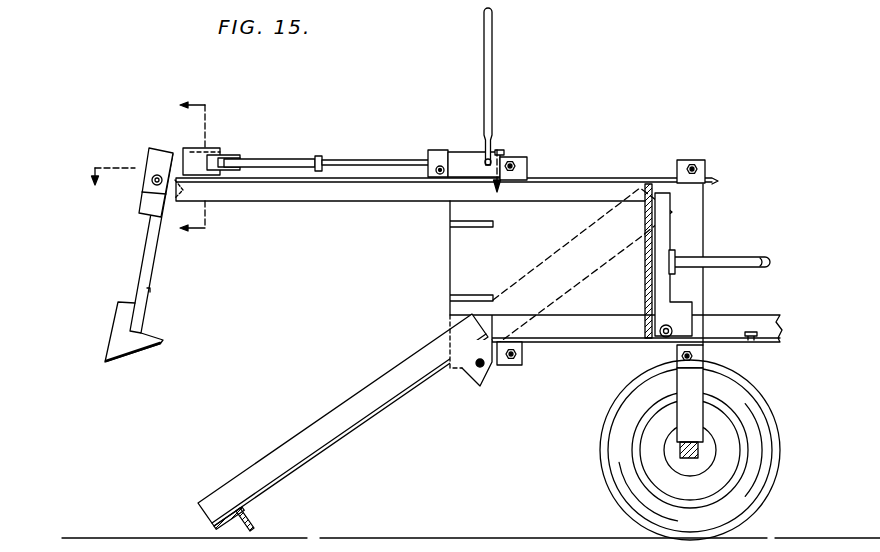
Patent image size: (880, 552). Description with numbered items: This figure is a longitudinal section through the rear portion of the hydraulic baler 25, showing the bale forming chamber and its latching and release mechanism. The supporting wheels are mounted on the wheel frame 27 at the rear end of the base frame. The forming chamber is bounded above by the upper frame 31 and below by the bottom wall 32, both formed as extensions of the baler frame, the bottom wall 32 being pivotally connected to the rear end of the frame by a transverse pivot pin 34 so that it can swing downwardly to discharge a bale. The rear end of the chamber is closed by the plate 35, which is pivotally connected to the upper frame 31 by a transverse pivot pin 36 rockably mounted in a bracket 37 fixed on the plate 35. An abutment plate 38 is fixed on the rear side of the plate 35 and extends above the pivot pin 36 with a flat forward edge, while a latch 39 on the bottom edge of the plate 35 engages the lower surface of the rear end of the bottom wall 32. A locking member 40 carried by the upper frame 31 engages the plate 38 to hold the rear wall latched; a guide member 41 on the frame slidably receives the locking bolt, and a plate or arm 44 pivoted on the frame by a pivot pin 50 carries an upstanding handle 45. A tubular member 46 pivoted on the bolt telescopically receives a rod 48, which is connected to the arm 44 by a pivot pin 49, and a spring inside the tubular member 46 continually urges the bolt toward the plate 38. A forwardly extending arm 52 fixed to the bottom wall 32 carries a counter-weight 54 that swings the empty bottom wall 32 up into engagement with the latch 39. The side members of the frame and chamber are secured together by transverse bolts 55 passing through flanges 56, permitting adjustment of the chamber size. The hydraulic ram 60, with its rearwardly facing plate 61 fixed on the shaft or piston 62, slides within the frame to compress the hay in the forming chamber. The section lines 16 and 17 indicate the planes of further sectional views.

The section line 16- 16 is at (310, 176).
The section line 17- 17 is at (196, 166).
The hydraulic baler 25 is at (577, 342).
The wheel frame 27 is at (680, 381).
The upper frame 31 is at (362, 201).
The bottom wall 32 is at (320, 428).
The pivot pin 34 is at (490, 372).
The plate 35 is at (155, 279).
The pivot pin 36 is at (150, 185).
The bracket 37 is at (147, 174).
The plate 38 is at (150, 209).
The latch 39 is at (123, 353).
The locking member 40 is at (226, 154).
The guide member 41 is at (192, 148).
The plate or arm 44 is at (463, 158).
The handle 45 is at (493, 73).
The tubular member 46 is at (298, 158).
The rod 48 is at (368, 159).
The pivot pin 49 is at (443, 150).
The pivot pin 50 is at (443, 176).
The arm 52 is at (538, 262).
The counter-weight 54 is at (655, 180).
The transverse bolts 55 is at (513, 360).
The flanges 56 is at (708, 168).
The hydraulic ram 60 is at (719, 259).
The plate 61 is at (643, 273).
The shaft or piston 62 is at (753, 262).